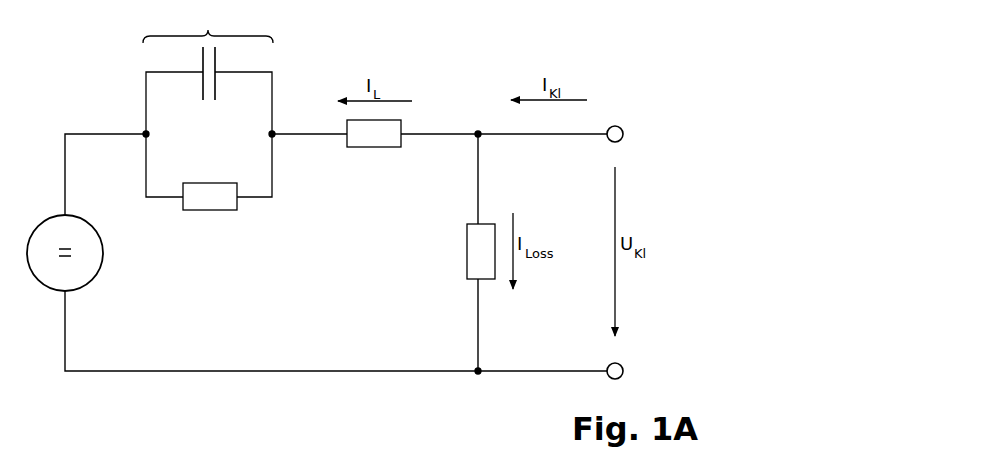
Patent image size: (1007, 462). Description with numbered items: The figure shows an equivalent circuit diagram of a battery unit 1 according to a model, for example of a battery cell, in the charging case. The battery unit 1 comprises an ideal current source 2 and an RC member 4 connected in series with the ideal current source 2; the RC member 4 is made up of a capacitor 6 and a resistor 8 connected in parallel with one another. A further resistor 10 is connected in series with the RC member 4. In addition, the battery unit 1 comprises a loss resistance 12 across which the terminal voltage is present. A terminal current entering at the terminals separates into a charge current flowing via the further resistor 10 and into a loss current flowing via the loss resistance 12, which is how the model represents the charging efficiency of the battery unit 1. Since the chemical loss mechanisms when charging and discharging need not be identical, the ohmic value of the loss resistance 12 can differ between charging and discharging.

The battery unit 1 is at (609, 73).
The ideal current source 2 is at (103, 253).
The RC member 4 is at (208, 102).
The capacitor 6 is at (215, 90).
The resistor 8 is at (210, 210).
The further resistor 10 is at (402, 142).
The loss resistance 12 is at (467, 270).